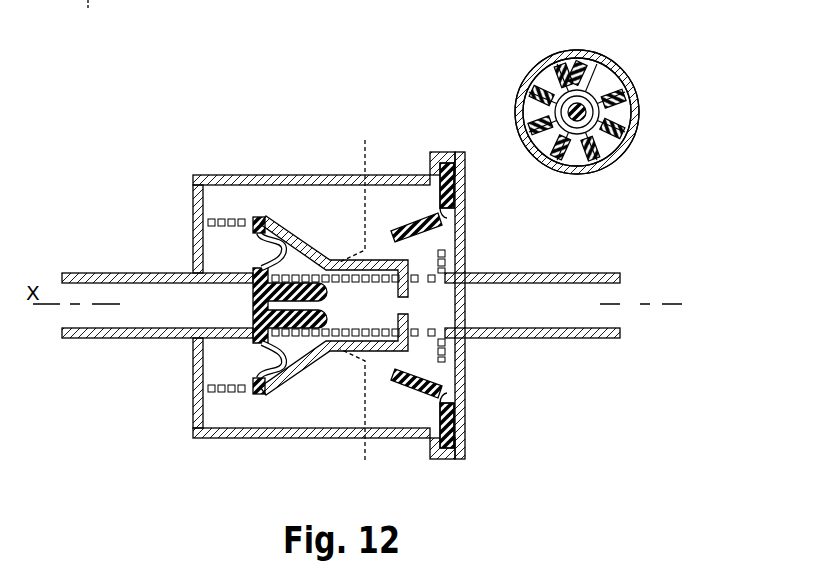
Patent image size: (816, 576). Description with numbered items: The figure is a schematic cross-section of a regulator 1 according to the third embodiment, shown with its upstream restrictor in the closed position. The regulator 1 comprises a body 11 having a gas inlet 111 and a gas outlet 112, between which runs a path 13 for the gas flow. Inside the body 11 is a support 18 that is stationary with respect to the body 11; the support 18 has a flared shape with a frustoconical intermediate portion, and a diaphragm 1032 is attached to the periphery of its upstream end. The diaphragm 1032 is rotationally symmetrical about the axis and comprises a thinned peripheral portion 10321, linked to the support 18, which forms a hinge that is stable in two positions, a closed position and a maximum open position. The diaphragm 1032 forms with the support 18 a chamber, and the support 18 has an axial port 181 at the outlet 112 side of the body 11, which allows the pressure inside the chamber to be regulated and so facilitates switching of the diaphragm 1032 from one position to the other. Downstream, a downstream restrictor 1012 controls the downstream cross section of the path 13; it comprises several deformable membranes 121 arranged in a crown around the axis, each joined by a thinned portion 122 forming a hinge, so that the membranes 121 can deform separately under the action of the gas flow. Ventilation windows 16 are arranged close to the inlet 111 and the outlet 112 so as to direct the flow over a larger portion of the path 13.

The regulator 1 is at (279, 306).
The body 11 is at (300, 176).
The path 13 is at (250, 200).
The support 18 is at (305, 232).
The downstream restrictor 1012 is at (420, 210).
The thinned portion 122 is at (441, 221).
The deformable membranes 121 is at (628, 85).
The axial port 181 is at (420, 303).
The gas inlet 111 is at (60, 322).
The gas outlet 112 is at (620, 320).
The ventilation windows 16 is at (215, 392).
The diaphragm 1032 is at (255, 267).
The thinned peripheral portion 10321 is at (262, 246).